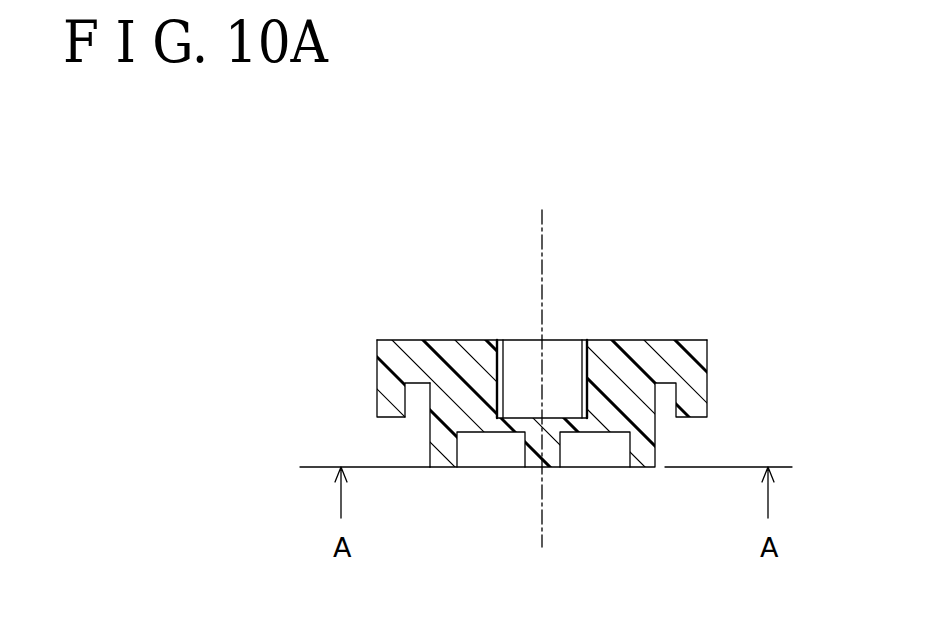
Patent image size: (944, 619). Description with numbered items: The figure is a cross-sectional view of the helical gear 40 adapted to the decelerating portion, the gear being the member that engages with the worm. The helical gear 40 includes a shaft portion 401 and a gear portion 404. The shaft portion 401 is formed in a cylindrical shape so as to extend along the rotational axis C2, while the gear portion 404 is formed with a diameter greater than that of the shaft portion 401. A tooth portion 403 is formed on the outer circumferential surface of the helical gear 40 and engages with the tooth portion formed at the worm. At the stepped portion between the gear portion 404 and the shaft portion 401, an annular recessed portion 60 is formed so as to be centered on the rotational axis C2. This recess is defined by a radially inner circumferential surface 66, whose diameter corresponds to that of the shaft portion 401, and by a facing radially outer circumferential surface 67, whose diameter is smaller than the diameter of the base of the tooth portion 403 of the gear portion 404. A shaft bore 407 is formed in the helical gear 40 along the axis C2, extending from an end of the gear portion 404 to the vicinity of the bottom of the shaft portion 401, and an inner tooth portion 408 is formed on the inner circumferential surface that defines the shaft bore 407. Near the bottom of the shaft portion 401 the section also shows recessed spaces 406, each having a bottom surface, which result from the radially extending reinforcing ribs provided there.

The helical gear 40 is at (423, 229).
The annular recessed portion 60 is at (413, 340).
The radially inner circumferential surface 66 is at (426, 418).
The radially outer circumferential surface 67 is at (423, 388).
The shaft portion 401 is at (657, 432).
The tooth portion 403 is at (705, 380).
The gear portion 404 is at (652, 350).
The recess 406 is at (595, 448).
The shaft bore 407 is at (560, 350).
The inner tooth portion 408 is at (515, 340).
The rotational axis C2 is at (541, 363).